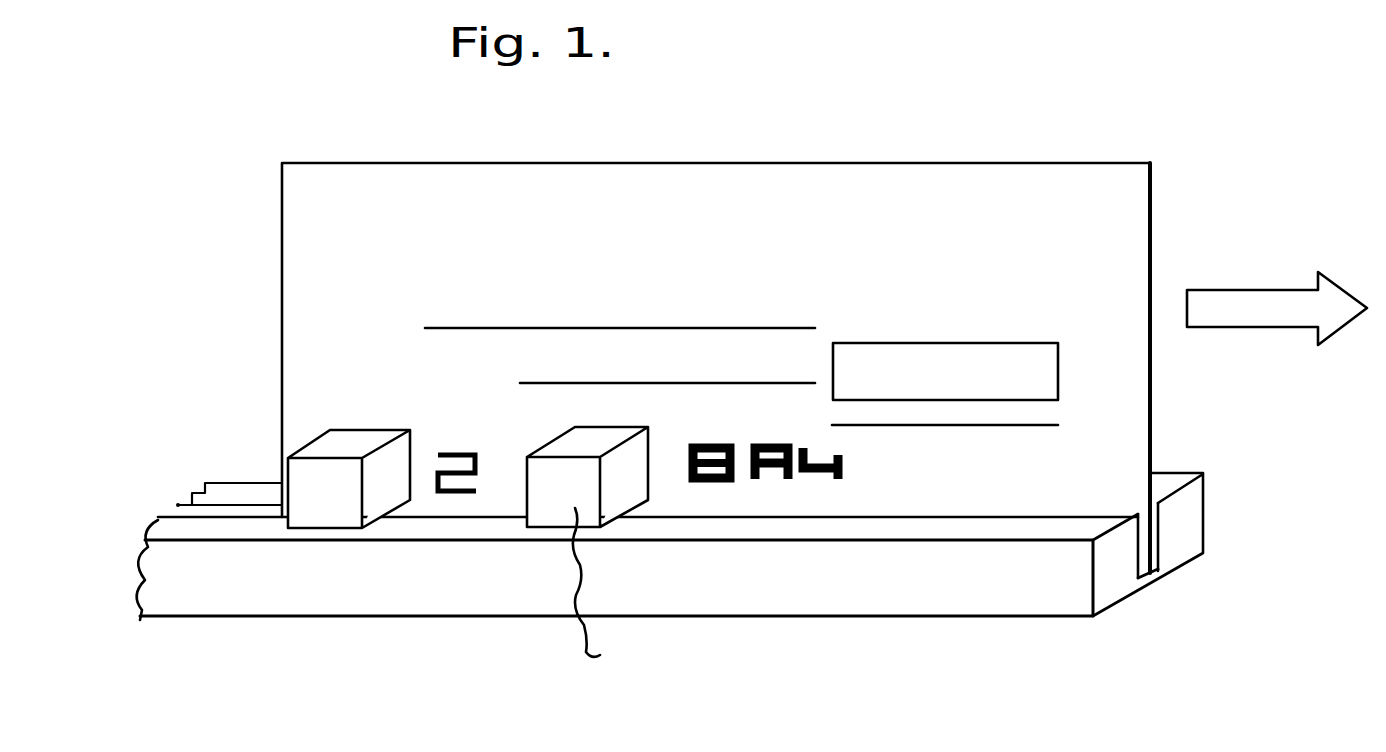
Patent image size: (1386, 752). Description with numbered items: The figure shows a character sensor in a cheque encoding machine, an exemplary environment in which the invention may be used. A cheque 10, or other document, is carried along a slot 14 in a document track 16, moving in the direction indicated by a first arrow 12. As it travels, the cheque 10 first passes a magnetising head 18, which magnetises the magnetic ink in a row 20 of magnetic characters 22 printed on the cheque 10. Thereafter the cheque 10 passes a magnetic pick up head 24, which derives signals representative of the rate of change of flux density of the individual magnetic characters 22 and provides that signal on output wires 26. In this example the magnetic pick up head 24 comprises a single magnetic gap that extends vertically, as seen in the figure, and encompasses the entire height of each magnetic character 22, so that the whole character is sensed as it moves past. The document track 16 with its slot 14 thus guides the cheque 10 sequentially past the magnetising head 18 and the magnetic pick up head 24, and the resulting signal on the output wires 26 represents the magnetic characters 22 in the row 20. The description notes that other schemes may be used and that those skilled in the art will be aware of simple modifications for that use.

The cheque 10 is at (716, 330).
The first arrow 12 is at (1283, 293).
The slot 14 is at (1155, 573).
The document track 16 is at (1200, 528).
The magnetising head 18 is at (342, 503).
The row of magnetic characters 20 is at (804, 440).
The magnetic characters 22 is at (766, 443).
The magnetic pick up head 24 is at (560, 497).
The output wires 26 is at (605, 648).